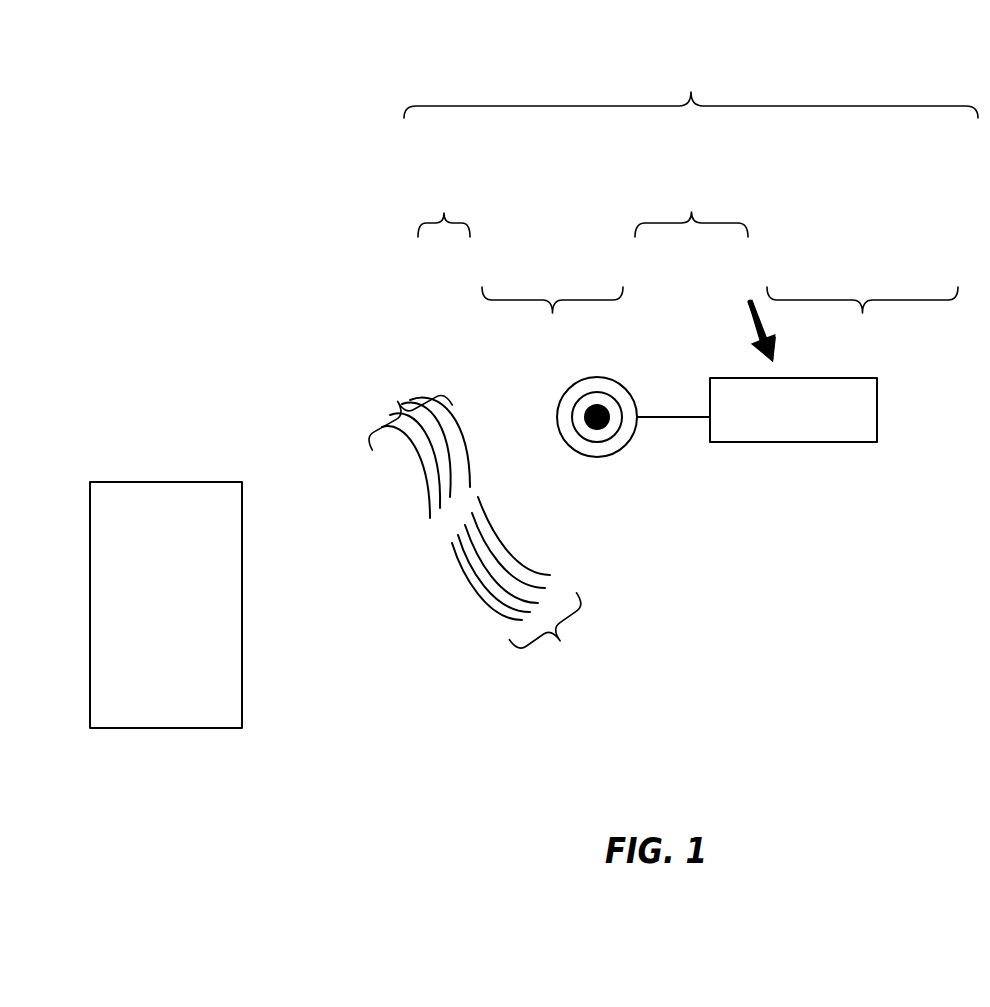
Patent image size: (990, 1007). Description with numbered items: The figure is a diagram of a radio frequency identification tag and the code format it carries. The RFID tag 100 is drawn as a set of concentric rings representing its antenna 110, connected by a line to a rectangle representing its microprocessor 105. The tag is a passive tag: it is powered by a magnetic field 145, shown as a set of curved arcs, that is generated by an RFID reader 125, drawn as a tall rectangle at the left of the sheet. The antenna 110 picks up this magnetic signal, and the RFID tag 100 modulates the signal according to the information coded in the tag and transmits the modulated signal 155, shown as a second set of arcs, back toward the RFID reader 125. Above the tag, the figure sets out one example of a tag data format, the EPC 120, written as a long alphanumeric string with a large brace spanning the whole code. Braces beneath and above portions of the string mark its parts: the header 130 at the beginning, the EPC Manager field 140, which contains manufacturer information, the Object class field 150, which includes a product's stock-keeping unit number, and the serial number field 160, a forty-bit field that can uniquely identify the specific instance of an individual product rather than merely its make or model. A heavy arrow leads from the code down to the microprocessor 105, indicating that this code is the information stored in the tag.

The RFID tag 100 is at (635, 473).
The microprocessor 105 is at (773, 428).
The antenna 110 is at (572, 428).
The EPC 120 is at (692, 92).
The RFID reader 125 is at (165, 493).
The header 130 is at (444, 210).
The EPC Manager field 140 is at (553, 316).
The magnetic field 145 is at (395, 398).
The Object class field 150 is at (692, 209).
The modulated signal 155 is at (562, 645).
The serial number field 160 is at (860, 316).